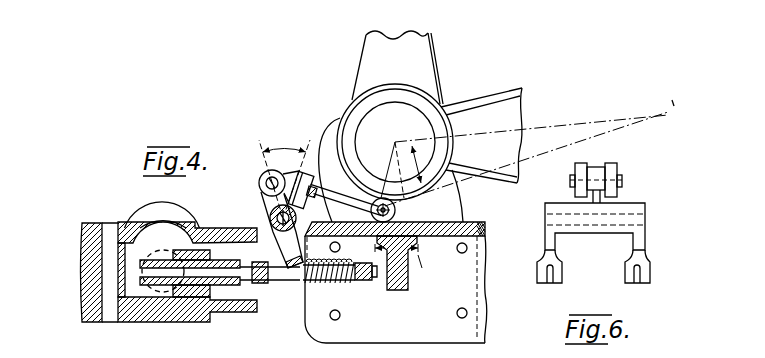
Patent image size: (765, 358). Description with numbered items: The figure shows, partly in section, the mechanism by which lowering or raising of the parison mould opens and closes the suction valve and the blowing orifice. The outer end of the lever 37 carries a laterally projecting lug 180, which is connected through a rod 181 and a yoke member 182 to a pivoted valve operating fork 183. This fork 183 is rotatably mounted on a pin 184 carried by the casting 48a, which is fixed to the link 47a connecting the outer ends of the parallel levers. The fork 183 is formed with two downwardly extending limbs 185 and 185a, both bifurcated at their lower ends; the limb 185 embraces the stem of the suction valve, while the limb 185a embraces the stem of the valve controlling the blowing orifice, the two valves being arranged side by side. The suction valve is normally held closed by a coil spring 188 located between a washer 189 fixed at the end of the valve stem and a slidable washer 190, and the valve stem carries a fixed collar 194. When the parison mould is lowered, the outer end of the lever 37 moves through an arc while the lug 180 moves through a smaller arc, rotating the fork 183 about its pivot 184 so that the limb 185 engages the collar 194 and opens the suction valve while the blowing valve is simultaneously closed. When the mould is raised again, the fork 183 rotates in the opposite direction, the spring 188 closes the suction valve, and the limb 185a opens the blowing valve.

In FIG. 4, the lever 37 is at (481, 135).
In FIG. 4, the link 47a is at (413, 71).
In FIG. 4, the casting 48a is at (484, 223).
In FIG. 4, the lug 180 is at (396, 211).
In FIG. 4, the rod 181 is at (340, 193).
In FIG. 4, the yoke member 182 is at (304, 171).
In FIG. 6, the yoke member 182 is at (611, 165).
In FIG. 4, the valve operating fork 183 is at (268, 204).
In FIG. 6, the valve operating fork 183 is at (646, 206).
In FIG. 4, the pin 184 is at (297, 216).
In FIG. 4, the limb 185 is at (299, 280).
In FIG. 6, the limb 185 is at (540, 278).
In FIG. 6, the limb 185a is at (652, 271).
In FIG. 4, the coil spring 188 is at (352, 281).
In FIG. 4, the washer 189 is at (356, 265).
In FIG. 4, the slidable washer 190 is at (311, 313).
In FIG. 4, the fixed collar 194 is at (262, 283).